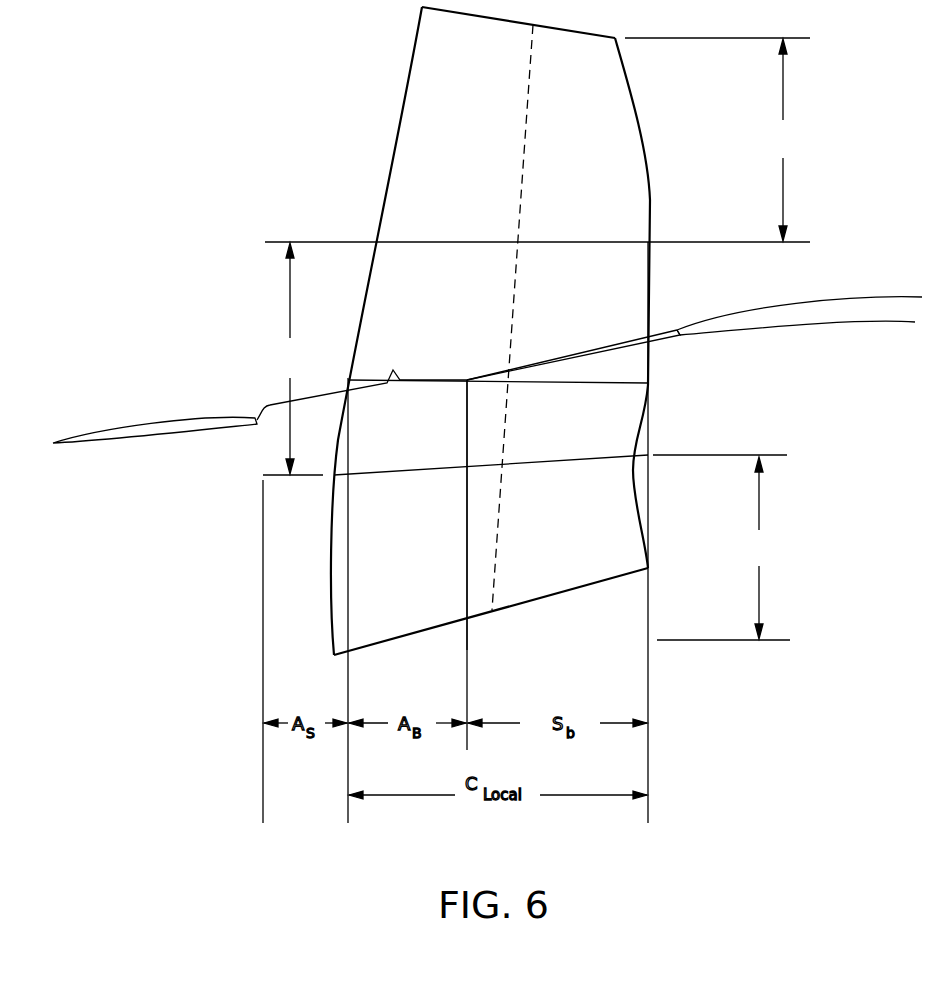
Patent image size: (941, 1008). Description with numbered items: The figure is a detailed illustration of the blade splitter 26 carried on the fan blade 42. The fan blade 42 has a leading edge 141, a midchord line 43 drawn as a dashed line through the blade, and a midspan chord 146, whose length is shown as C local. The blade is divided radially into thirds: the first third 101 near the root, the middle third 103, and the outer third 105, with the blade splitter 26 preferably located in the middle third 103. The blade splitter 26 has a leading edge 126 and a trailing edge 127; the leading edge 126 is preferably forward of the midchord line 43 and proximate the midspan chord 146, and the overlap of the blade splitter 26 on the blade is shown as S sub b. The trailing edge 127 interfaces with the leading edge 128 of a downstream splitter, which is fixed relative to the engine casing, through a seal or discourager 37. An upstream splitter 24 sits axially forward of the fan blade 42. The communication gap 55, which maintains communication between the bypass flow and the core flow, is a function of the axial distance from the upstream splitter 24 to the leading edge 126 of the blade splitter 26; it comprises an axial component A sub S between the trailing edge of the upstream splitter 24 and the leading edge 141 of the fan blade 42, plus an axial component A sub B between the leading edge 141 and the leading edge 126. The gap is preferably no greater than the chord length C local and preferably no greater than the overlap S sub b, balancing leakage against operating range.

The upstream splitter 24 is at (112, 438).
The blade splitter 26 is at (567, 345).
The seal or discourager 37 is at (677, 318).
The fan blade 42 is at (622, 205).
The midchord line 43 is at (520, 212).
The communication gap 55 is at (362, 383).
The first third 101 is at (761, 548).
The middle third 103 is at (291, 358).
The outer third 105 is at (783, 140).
The leading edge of the blade splitter 126 is at (467, 382).
The trailing edge of the blade splitter 127 is at (660, 337).
The leading edge of the downstream splitter 128 is at (683, 328).
The leading edge of the fan 141 is at (410, 133).
The midspan chord 146 is at (645, 385).